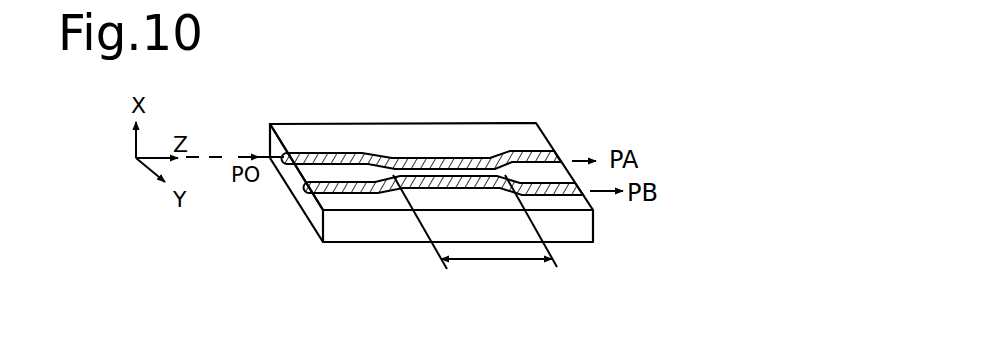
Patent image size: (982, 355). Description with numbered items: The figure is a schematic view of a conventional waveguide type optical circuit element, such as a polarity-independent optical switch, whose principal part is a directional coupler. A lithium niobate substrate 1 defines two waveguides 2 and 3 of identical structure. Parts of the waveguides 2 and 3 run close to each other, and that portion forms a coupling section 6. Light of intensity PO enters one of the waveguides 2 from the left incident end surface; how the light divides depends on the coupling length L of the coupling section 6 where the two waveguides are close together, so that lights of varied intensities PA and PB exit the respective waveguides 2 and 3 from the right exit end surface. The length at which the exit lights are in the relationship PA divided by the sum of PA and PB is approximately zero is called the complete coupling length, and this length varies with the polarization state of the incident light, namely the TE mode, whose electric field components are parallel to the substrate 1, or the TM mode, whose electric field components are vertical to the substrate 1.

The substrate 1 is at (341, 123).
The waveguide 2 is at (516, 153).
The waveguide 3 is at (592, 211).
The coupling section 6 is at (457, 170).